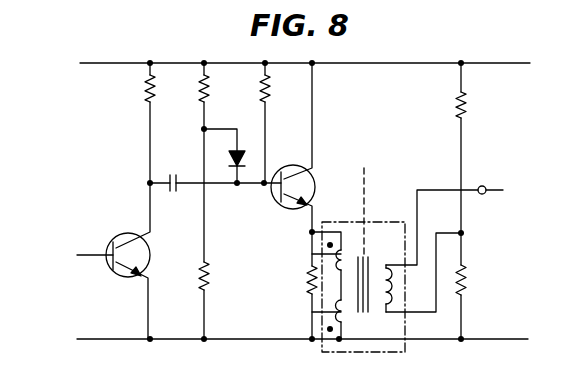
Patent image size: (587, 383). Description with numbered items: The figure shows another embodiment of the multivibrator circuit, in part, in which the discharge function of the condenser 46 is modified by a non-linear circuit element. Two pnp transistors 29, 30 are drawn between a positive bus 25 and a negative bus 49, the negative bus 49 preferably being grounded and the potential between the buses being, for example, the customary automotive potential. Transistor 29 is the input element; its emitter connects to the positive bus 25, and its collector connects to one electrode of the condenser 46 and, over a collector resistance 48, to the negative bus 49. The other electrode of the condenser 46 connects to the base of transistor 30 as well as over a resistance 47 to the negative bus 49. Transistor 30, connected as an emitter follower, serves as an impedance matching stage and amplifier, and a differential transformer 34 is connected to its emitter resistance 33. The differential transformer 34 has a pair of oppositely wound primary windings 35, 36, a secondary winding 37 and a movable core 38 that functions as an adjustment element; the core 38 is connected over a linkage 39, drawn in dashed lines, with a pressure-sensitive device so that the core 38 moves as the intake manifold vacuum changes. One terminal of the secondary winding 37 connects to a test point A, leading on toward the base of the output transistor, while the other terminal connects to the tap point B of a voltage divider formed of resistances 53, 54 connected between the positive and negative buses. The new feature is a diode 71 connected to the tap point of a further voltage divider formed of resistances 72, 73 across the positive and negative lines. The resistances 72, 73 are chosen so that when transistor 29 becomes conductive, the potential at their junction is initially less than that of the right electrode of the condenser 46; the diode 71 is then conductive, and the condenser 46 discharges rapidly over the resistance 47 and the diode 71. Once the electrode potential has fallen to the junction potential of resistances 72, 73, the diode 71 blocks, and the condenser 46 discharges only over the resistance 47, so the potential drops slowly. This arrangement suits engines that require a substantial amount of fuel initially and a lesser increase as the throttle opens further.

The positive bus 25 is at (243, 340).
The transistor 29 is at (130, 278).
The transistor 30 is at (309, 178).
The emitter resistance 33 is at (306, 276).
The differential transformer 34 is at (352, 252).
The primary winding 35 is at (311, 253).
The primary winding 36 is at (311, 312).
The secondary winding 37 is at (398, 297).
The movable core 38 is at (374, 262).
The linkage 39 is at (368, 184).
The condenser 46 is at (172, 190).
The resistance 47 is at (261, 90).
The collector resistance 48 is at (147, 90).
The negative bus 49 is at (356, 67).
The resistance 53 is at (467, 106).
The resistance 54 is at (467, 290).
The diode 71 is at (234, 158).
The resistance 72 is at (199, 92).
The resistance 73 is at (198, 285).
The test point A is at (481, 186).
The tap point B is at (471, 225).